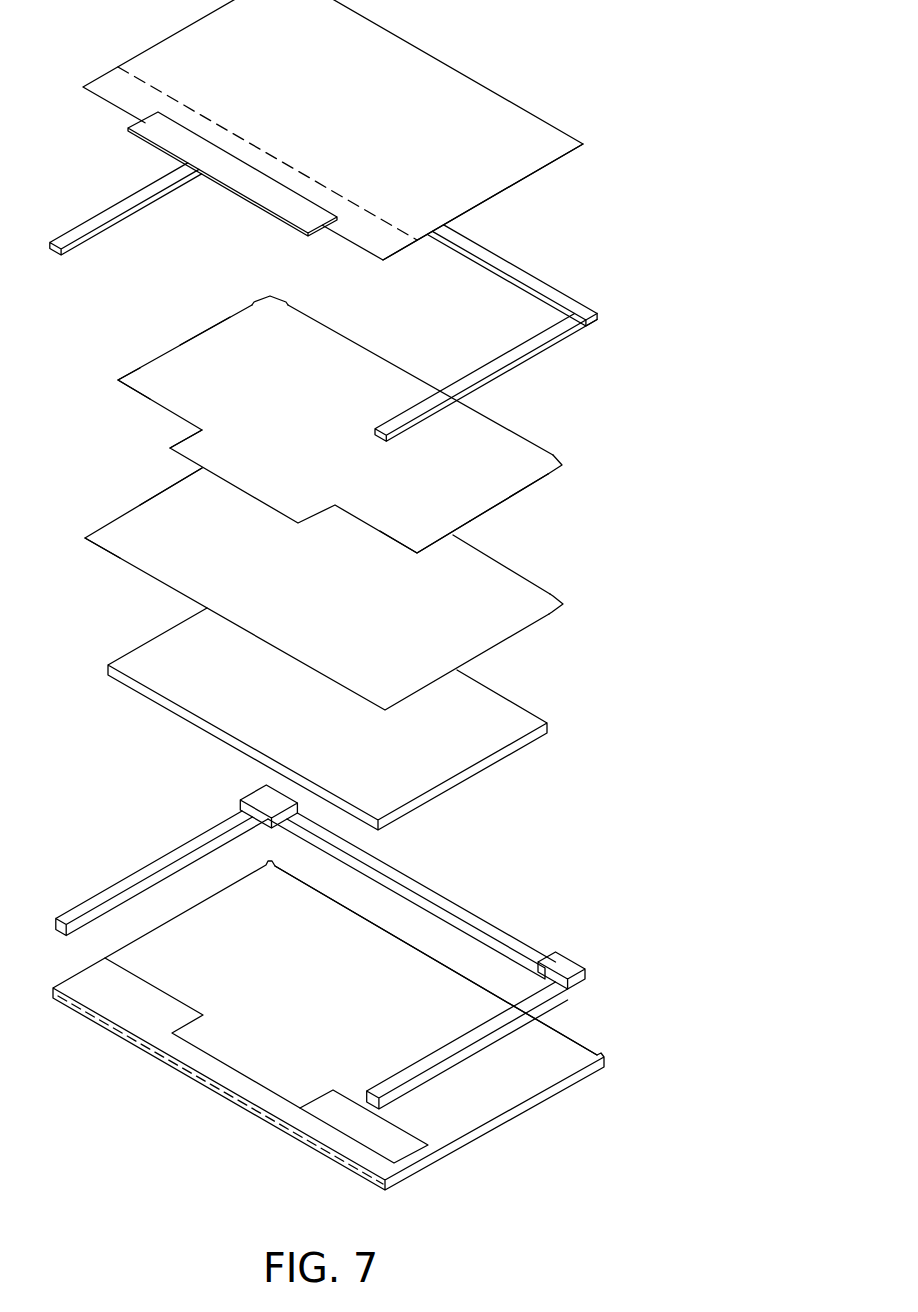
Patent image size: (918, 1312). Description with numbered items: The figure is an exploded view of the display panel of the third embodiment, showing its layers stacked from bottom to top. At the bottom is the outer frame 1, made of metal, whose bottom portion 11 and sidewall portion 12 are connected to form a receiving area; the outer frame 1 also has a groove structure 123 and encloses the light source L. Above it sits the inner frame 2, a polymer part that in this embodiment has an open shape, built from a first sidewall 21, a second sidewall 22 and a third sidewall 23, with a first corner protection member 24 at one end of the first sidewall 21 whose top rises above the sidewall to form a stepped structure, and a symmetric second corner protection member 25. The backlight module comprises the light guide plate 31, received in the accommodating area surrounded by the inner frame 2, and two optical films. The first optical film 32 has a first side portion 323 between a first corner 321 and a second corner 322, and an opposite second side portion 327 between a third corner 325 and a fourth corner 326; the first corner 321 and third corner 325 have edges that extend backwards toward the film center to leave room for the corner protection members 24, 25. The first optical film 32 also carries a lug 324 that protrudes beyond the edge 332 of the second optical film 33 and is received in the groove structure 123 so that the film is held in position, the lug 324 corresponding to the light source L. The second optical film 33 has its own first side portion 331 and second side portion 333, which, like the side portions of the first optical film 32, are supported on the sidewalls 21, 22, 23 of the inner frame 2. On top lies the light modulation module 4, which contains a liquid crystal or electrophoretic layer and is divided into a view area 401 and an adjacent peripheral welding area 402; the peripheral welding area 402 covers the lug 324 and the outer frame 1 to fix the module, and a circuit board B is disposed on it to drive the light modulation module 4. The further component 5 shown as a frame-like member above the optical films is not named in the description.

The outer frame 1 is at (360, 1034).
The bottom portion 11 is at (262, 983).
The sidewall portion 12 is at (524, 1082).
The groove structure 123 is at (357, 1110).
The light source L is at (296, 1128).
The inner frame 2 is at (368, 951).
The first sidewall 21 is at (160, 865).
The second sidewall 22 is at (412, 880).
The third sidewall 23 is at (425, 1067).
The first corner protection member 24 is at (270, 790).
The second corner protection member 25 is at (567, 977).
The light guide plate 31 is at (565, 708).
The first optical film 32 is at (341, 395).
The first corner 321 is at (270, 296).
The second corner 322 is at (130, 378).
The first side portion 323 is at (200, 343).
The lug 324 is at (200, 448).
The third corner 325 is at (553, 463).
The fourth corner 326 is at (417, 550).
The second side portion 327 is at (493, 503).
The second optical film 33 is at (341, 580).
The first side portion 331 is at (155, 507).
The edge 332 is at (130, 567).
The second side portion 333 is at (490, 634).
The light modulation module 4 is at (355, 158).
The view area 401 is at (476, 177).
The peripheral welding area 402 is at (390, 238).
The upper frame 5 is at (594, 283).
The circuit board B is at (140, 136).